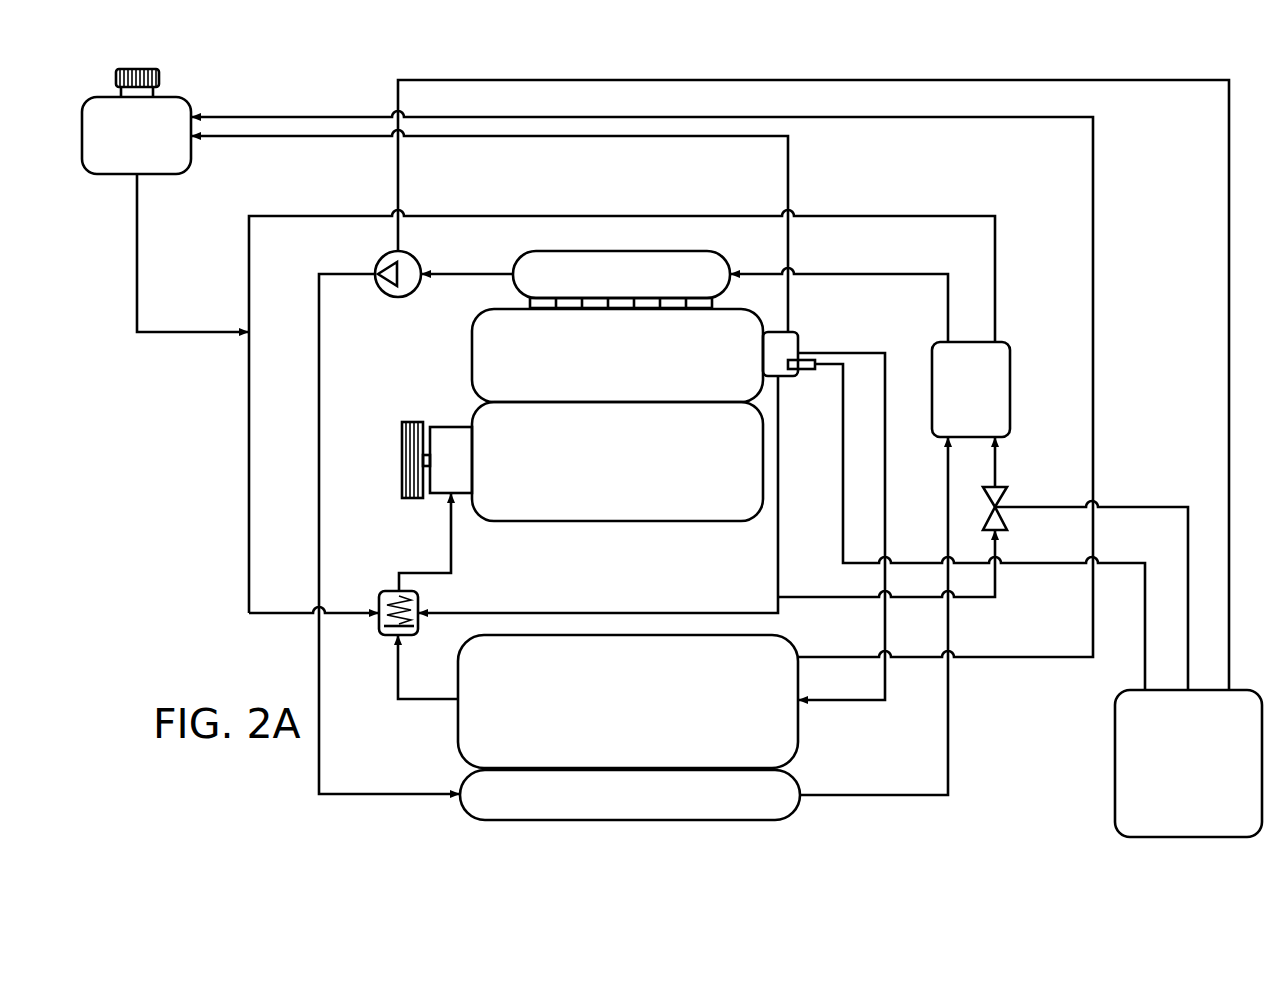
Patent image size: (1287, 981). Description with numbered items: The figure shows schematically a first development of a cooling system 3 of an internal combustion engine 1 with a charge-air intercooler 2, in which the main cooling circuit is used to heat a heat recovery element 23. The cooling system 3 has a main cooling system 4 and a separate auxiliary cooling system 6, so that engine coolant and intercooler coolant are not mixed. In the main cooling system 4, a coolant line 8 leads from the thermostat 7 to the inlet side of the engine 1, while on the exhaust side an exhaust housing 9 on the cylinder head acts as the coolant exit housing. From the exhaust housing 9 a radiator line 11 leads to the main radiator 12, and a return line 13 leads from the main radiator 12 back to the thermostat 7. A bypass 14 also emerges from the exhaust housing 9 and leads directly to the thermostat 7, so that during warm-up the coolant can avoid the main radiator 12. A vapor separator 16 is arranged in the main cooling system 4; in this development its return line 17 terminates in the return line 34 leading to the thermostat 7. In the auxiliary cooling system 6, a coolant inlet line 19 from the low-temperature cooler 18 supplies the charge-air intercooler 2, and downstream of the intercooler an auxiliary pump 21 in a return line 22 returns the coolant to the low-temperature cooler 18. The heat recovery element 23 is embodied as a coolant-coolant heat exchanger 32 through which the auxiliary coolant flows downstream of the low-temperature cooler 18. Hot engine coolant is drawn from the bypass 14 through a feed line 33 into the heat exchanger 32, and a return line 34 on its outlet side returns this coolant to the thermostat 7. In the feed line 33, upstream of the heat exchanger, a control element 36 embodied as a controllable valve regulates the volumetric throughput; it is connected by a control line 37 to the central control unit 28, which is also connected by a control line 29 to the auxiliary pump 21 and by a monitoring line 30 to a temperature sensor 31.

The internal combustion engine 1 is at (617, 415).
The charge-air intercooler 2 is at (621, 279).
The cooling system 3 is at (839, 474).
The main cooling system 4 is at (841, 513).
The auxiliary cooling system 6 is at (839, 293).
The thermostat 7 is at (395, 590).
The coolant line 8 is at (436, 542).
The exhaust housing 9 is at (780, 354).
The radiator line 11 is at (841, 528).
The main radiator 12 is at (628, 701).
The return line 13 is at (426, 667).
The bypass 14 is at (598, 496).
The vapor separator 16 is at (136, 121).
The return line 17 is at (193, 255).
The low-temperature cooler 18 is at (630, 795).
The coolant inlet line 19 is at (876, 616).
The auxiliary pump 21 is at (404, 296).
The return line 22 is at (389, 536).
The heat recovery element 23 is at (971, 389).
The central control unit 28 is at (1188, 763).
The control line 29 is at (813, 368).
The monitoring line 30 is at (980, 527).
The temperature sensor 31 is at (803, 372).
The coolant-coolant heat exchanger 32 is at (971, 389).
The feed line 33 is at (888, 563).
The return line 34 is at (622, 400).
The control element 36 is at (997, 488).
The control line 37 is at (1091, 584).